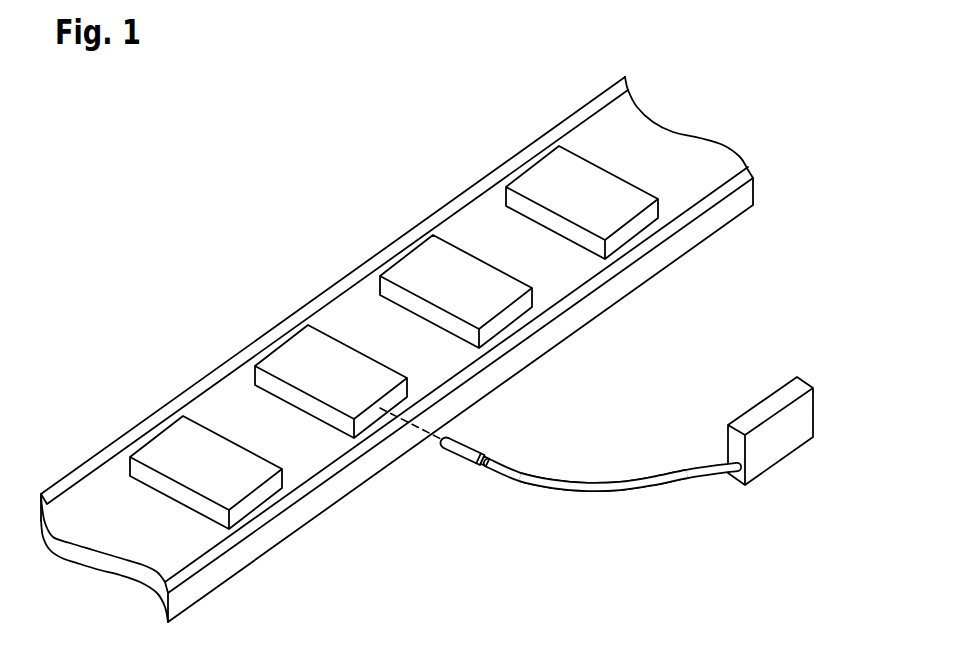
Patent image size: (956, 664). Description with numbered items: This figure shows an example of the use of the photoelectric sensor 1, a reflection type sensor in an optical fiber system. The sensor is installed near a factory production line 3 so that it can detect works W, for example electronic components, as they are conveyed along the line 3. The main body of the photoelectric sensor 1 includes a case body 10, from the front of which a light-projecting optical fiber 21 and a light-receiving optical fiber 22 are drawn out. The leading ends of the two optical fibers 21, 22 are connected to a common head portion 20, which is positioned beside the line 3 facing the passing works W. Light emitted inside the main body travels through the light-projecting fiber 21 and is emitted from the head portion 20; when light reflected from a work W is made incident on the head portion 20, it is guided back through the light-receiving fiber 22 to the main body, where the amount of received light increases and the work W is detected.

The photoelectric sensor 1 is at (625, 441).
The factory production line 3 is at (352, 297).
The work W is at (423, 260).
The case body 10 is at (783, 448).
The head portion 20 is at (463, 463).
The light-projecting optical fiber 21 is at (630, 478).
The light-receiving optical fiber 22 is at (603, 493).